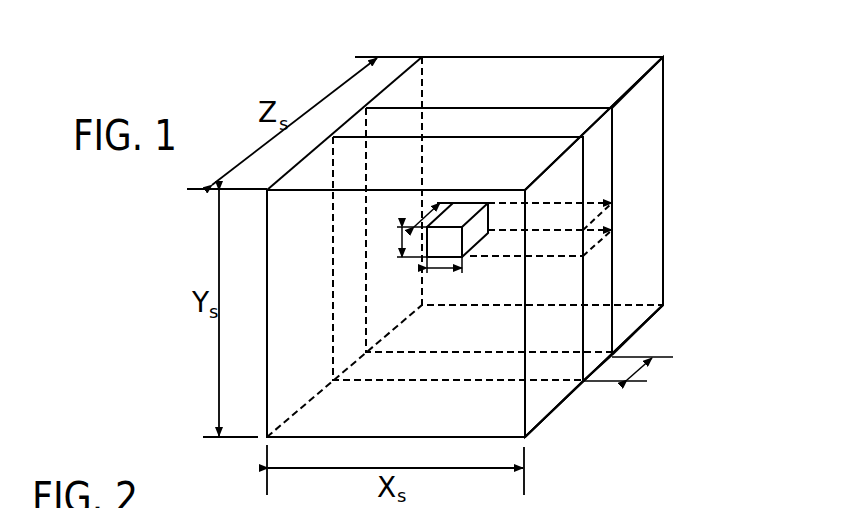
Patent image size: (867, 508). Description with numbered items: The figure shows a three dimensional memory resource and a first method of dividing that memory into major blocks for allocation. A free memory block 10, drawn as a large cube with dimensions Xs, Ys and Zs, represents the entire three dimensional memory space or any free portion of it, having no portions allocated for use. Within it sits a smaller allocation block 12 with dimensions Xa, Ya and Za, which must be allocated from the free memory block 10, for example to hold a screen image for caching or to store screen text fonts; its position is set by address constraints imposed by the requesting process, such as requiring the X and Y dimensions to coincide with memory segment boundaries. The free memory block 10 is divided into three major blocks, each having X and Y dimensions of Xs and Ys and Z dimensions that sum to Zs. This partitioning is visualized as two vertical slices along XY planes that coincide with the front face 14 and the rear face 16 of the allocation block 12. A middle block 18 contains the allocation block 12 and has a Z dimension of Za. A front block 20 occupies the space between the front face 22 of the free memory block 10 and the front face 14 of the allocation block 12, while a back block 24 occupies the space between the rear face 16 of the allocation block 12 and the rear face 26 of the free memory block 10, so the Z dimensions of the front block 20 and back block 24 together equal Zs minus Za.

The free memory block 10 is at (697, 73).
The allocation block 12 is at (471, 247).
The front face of block 12 14 is at (443, 240).
The rear face of block 12 16 is at (476, 202).
The middle block 18 is at (594, 380).
The front block 20 is at (562, 411).
The front face of block 10 22 is at (296, 372).
The back block 24 is at (652, 320).
The rear face of block 10 26 is at (643, 167).